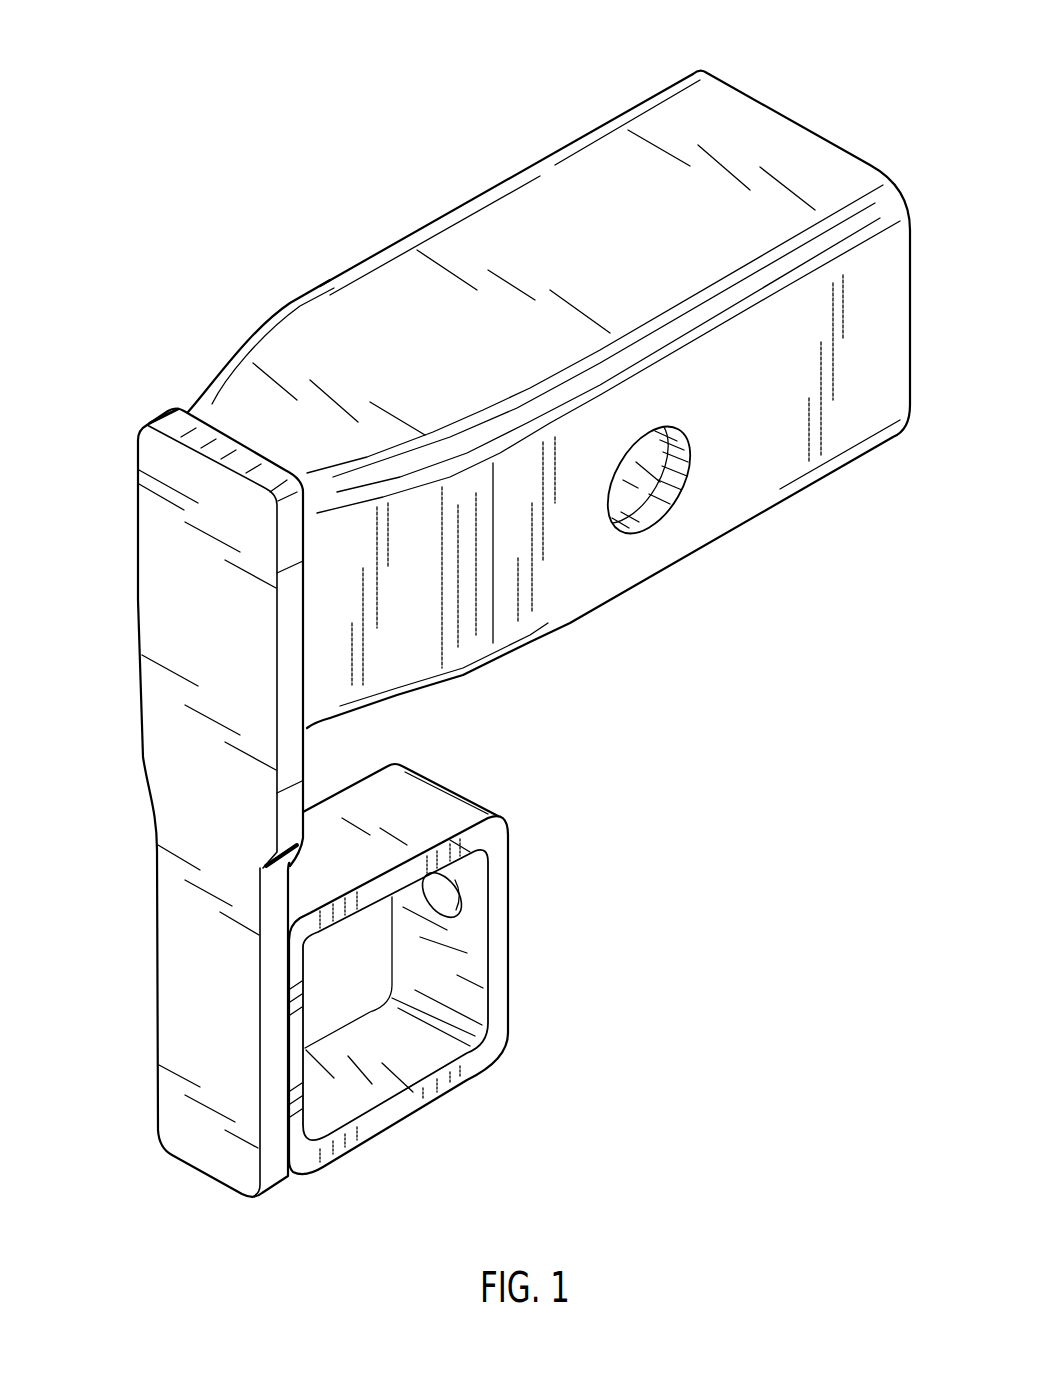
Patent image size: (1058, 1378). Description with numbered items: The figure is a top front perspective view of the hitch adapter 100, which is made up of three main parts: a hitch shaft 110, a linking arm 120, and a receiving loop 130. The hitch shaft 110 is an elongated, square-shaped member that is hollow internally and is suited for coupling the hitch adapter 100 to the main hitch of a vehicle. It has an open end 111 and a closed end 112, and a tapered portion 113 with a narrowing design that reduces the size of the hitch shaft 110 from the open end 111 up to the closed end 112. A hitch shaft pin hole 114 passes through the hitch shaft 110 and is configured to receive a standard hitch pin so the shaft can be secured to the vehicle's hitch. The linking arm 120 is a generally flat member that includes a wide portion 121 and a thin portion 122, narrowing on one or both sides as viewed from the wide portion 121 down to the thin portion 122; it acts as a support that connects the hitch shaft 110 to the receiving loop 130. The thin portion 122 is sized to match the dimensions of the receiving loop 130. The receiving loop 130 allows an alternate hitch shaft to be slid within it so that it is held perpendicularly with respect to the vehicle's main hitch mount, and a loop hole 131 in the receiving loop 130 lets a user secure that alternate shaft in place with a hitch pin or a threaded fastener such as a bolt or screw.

The hitch adapter 100 is at (214, 160).
The hitch shaft 110 is at (430, 209).
The open end 111 is at (815, 131).
The closed end 112 is at (202, 391).
The tapered portion 113 is at (462, 650).
The hitch shaft pin hole 114 is at (663, 505).
The linking arm 120 is at (143, 825).
The wide portion 121 is at (140, 616).
The thin portion 122 is at (165, 1108).
The receiving loop 130 is at (523, 870).
The loop hole 131 is at (457, 913).